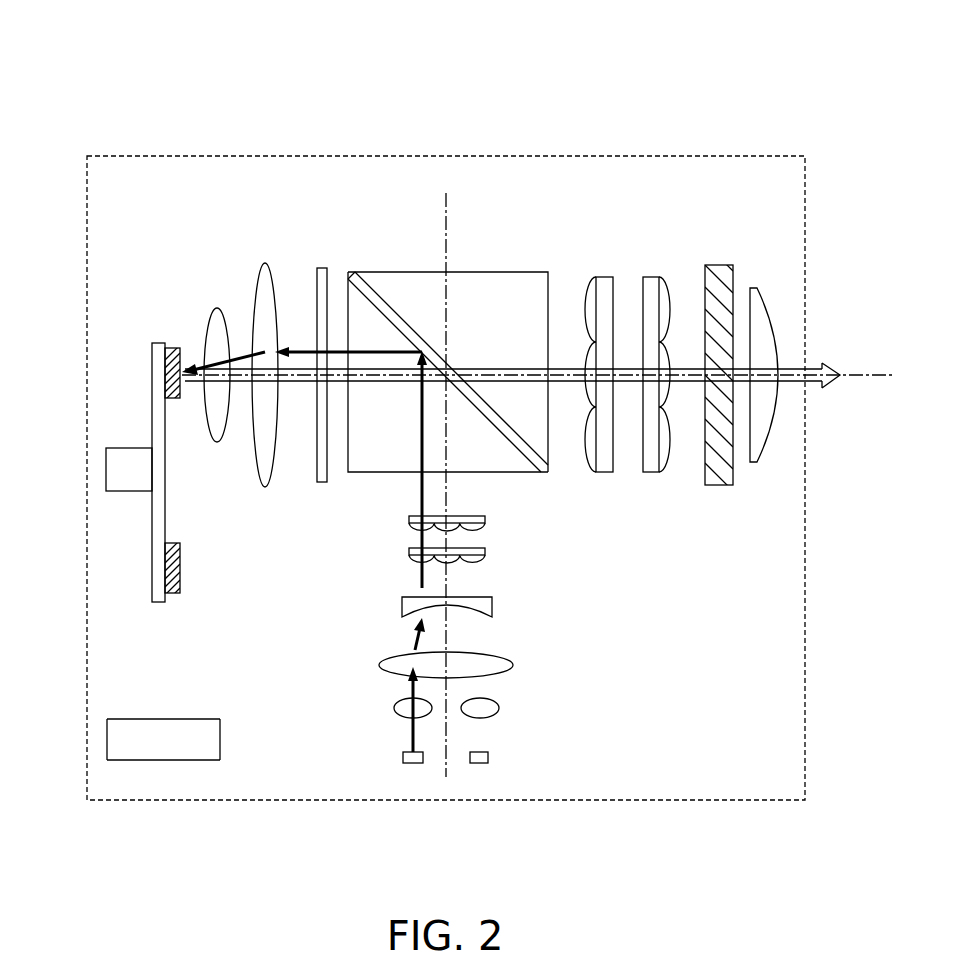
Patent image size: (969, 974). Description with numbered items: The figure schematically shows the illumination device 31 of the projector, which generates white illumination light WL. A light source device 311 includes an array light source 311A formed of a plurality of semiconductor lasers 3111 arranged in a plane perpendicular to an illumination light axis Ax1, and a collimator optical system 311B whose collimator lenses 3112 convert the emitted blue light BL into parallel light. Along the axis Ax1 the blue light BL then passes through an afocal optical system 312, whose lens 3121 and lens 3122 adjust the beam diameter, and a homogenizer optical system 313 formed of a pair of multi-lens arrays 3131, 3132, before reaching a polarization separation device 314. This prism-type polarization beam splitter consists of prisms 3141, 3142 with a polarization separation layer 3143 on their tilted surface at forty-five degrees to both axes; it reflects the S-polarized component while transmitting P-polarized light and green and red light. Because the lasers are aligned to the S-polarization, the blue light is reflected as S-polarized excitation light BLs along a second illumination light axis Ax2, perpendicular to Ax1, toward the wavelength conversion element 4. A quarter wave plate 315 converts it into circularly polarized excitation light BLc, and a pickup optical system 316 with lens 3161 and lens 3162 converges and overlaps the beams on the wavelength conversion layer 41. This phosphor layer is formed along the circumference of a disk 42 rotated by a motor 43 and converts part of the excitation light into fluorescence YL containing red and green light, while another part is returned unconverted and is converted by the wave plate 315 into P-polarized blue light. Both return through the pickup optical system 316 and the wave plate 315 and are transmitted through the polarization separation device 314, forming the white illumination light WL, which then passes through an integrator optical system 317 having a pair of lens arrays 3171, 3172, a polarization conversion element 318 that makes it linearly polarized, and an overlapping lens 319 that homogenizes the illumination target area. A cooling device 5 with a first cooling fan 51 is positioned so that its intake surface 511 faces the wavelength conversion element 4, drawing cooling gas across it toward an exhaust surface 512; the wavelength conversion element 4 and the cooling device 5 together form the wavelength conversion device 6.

The illumination device 31 is at (755, 156).
The light source device 311 is at (605, 705).
The array light source 311A is at (504, 747).
The collimator optical system 311B is at (513, 709).
The semiconductor laser 3111 is at (418, 764).
The collimator lens 3112 is at (473, 700).
The afocal optical system 312 is at (578, 597).
The lens 3121 is at (485, 655).
The lens 3122 is at (494, 607).
The homogenizer optical system 313 is at (578, 507).
The multi-lens array 3131 is at (488, 553).
The multi-lens array 3132 is at (488, 520).
The polarization separation device 314 is at (439, 352).
The prism 3141 is at (363, 478).
The prism 3142 is at (475, 285).
The polarization separation layer 3143 is at (398, 323).
The wave plate 315 is at (322, 268).
The pickup optical system 316 is at (155, 197).
The lens 3161 is at (263, 263).
The lens 3162 is at (212, 308).
The integrator optical system 317 is at (565, 197).
The lens array 3171 is at (602, 277).
The lens array 3172 is at (650, 277).
The polarization conversion element 318 is at (717, 265).
The overlapping lens 319 is at (763, 302).
The wavelength conversion element 4 is at (126, 364).
The wavelength conversion layer 41 is at (181, 545).
The disk 42 is at (150, 510).
The motor 43 is at (125, 449).
The cooling device 5 is at (124, 694).
The first cooling fan 51 is at (195, 739).
The intake surface 511 is at (175, 719).
The exhaust surface 512 is at (175, 760).
The wavelength conversion device 6 is at (37, 347).
The blue light BL is at (422, 441).
The S-polarized excitation light BLs is at (367, 349).
The circularly polarized excitation light BLc is at (300, 349).
The fluorescence YL is at (292, 400).
The illumination light WL is at (838, 360).
The illumination light axis Ax1 is at (448, 492).
The illumination light axis Ax2 is at (876, 371).